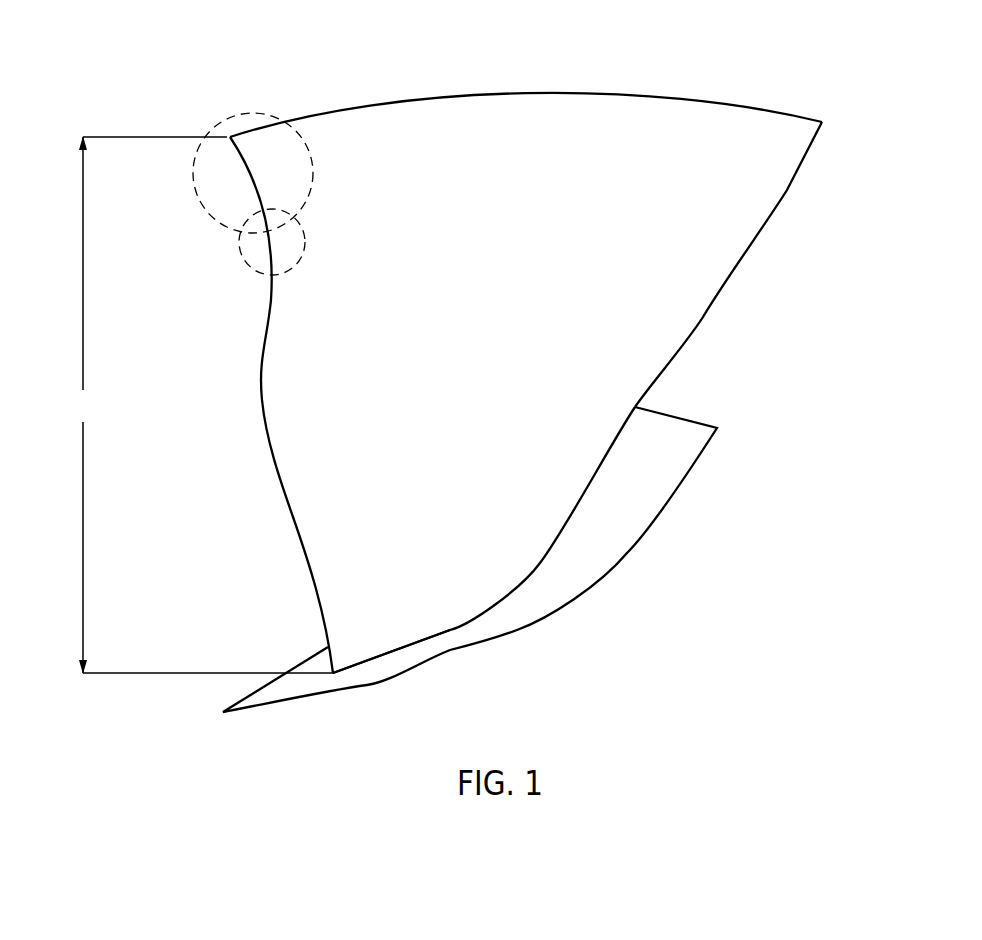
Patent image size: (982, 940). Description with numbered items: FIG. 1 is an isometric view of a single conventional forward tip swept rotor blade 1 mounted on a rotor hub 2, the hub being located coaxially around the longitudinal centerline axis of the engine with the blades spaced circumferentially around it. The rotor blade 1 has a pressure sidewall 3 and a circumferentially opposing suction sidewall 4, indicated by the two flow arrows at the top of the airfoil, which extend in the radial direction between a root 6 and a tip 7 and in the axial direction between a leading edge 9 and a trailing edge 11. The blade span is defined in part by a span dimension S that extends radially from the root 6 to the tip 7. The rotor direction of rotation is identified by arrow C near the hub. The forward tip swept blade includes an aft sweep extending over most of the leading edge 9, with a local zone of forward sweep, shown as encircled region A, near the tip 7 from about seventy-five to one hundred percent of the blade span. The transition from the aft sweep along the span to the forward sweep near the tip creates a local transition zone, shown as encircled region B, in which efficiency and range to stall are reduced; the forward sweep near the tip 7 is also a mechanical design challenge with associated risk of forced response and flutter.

The rotor blade 1 is at (262, 615).
The rotor hub 2 is at (627, 553).
The pressure sidewall 3 is at (486, 153).
The suction sidewall 4 is at (542, 152).
The root 6 is at (402, 648).
The tip 7 is at (370, 106).
The leading edge 9 is at (272, 462).
The trailing edge 11 is at (787, 190).
The encircled region of forward sweep A is at (313, 166).
The encircled transition zone B is at (305, 238).
The arrow of rotor direction of rotation C is at (228, 736).
The span dimension S is at (204, 405).